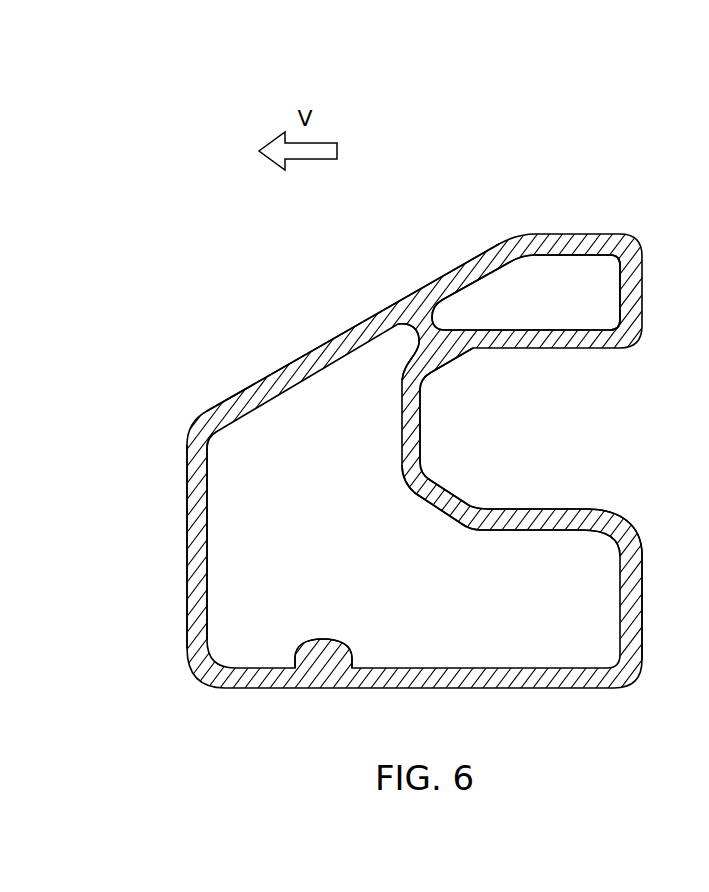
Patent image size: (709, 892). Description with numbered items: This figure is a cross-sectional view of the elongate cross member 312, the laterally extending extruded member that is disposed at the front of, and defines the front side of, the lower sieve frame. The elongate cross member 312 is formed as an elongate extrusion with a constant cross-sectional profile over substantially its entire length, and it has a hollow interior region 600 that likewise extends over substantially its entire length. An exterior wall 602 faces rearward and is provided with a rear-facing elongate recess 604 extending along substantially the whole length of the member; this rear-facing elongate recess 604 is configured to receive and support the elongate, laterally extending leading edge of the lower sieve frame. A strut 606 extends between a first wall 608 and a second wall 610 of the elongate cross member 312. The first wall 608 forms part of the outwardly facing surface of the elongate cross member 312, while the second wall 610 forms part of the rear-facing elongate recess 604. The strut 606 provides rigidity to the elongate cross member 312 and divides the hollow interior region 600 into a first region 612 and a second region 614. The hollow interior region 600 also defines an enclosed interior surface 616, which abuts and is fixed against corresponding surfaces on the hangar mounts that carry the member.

The elongate cross member 312 is at (211, 265).
The hollow interior region 600 is at (557, 287).
The exterior wall 602 is at (582, 508).
The rear-facing elongate recess 604 is at (581, 430).
The strut 606 is at (410, 327).
The first wall 608 is at (452, 265).
The second wall 610 is at (447, 358).
The first region 612 is at (520, 278).
The second region 614 is at (265, 510).
The enclosed interior surface 616 is at (297, 672).